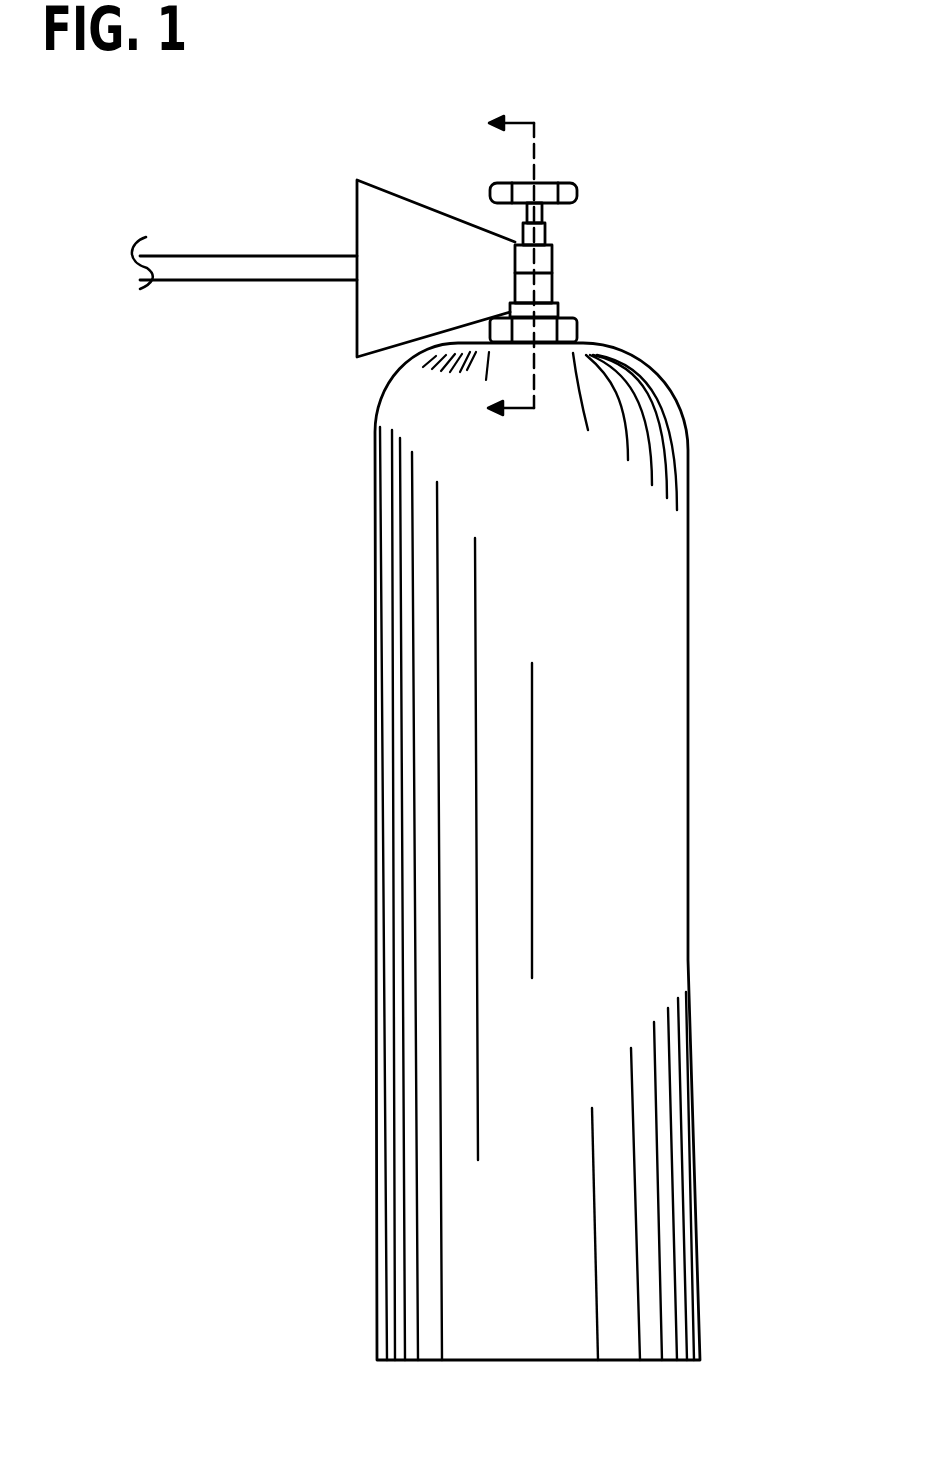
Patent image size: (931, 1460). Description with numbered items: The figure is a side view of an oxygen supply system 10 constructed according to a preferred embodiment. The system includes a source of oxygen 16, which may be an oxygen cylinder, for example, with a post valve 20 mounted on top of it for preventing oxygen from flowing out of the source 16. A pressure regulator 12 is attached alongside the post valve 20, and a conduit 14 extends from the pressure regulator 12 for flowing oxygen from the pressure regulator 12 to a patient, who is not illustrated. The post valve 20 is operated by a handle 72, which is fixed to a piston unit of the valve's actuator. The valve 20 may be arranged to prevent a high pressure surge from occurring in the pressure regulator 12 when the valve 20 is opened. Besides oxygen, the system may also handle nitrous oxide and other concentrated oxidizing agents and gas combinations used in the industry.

The oxygen supply system 10 is at (744, 321).
The pressure regulator 12 is at (368, 207).
The conduit 14 is at (254, 268).
The source of oxygen 16 is at (650, 646).
The post valve 20 is at (578, 261).
The handle 72 is at (548, 220).